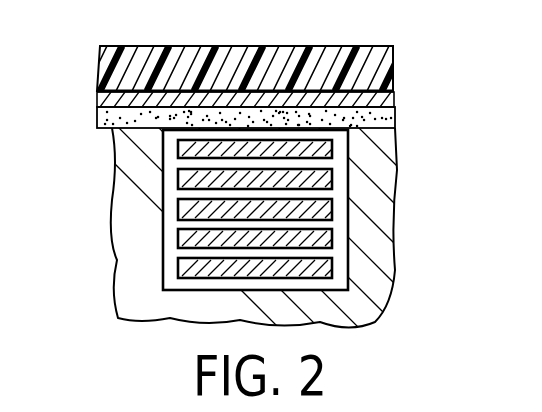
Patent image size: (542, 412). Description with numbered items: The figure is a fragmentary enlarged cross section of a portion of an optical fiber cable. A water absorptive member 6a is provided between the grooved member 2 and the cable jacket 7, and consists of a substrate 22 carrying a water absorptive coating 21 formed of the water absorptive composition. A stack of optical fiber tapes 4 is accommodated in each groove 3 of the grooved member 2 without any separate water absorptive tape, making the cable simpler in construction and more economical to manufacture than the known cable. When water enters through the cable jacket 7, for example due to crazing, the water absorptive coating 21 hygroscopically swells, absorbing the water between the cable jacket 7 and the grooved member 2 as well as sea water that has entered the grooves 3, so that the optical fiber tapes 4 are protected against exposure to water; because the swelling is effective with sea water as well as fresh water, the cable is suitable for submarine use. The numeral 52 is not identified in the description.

The grooved member 2 is at (142, 270).
The groove 3 is at (163, 225).
The optical fiber tapes 4 is at (332, 149).
The water absorptive member 6a is at (319, 88).
The cable jacket 7 is at (380, 63).
The water absorptive coating 21 is at (394, 118).
The substrate 22 is at (394, 100).
The lead 52 is at (541, 406).